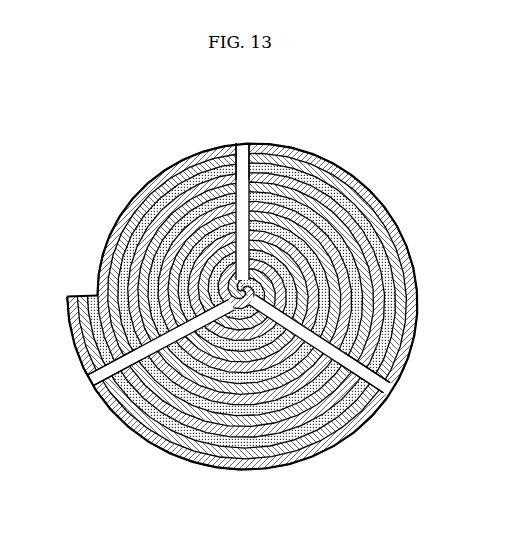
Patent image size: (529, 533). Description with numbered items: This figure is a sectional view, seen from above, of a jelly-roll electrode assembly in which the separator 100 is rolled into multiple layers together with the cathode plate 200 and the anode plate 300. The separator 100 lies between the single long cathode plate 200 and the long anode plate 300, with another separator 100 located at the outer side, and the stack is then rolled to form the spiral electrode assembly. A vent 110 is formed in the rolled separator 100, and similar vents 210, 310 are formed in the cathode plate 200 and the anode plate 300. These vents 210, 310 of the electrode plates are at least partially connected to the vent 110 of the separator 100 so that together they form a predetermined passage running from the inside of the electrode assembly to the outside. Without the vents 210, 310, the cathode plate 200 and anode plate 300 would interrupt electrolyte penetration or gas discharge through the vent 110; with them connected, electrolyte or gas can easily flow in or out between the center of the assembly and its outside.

The separator 100 is at (233, 448).
The vent 110 is at (243, 156).
The cathode plate 200 is at (267, 457).
The vent 210 is at (230, 151).
The anode plate 300 is at (297, 430).
The vent 310 is at (228, 170).